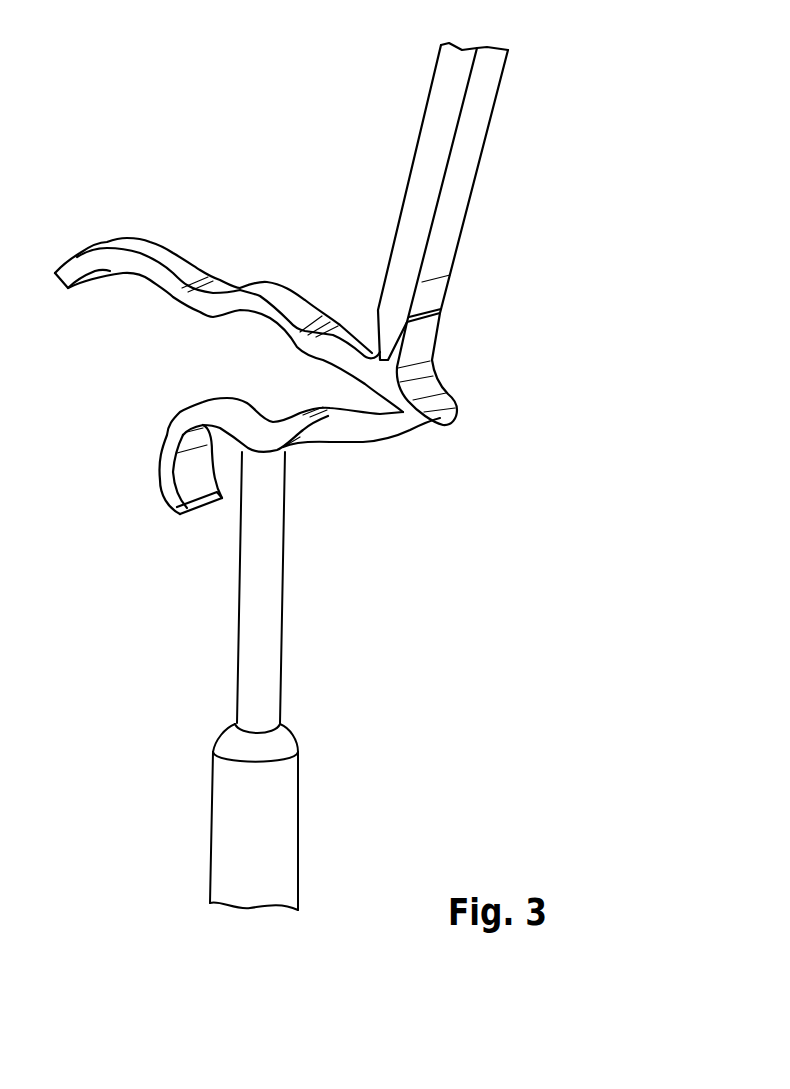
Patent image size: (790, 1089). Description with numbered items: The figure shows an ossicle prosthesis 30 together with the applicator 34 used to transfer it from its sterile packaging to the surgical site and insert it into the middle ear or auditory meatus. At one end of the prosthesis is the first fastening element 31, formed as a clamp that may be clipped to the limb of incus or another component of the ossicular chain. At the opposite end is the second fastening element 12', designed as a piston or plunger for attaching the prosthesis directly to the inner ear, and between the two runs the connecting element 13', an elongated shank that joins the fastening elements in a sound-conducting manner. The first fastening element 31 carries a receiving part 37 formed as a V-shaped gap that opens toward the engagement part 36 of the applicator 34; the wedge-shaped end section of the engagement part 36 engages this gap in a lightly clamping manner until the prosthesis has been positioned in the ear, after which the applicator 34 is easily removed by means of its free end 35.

The ossicle prosthesis 30 is at (372, 278).
The first fastening element 31 is at (348, 437).
The applicator 34 is at (493, 113).
The free end 35 is at (423, 145).
The engagement part 36 is at (437, 292).
The receiving part 37 is at (427, 343).
The connecting element 13' is at (301, 592).
The second fastening element 12' is at (295, 817).